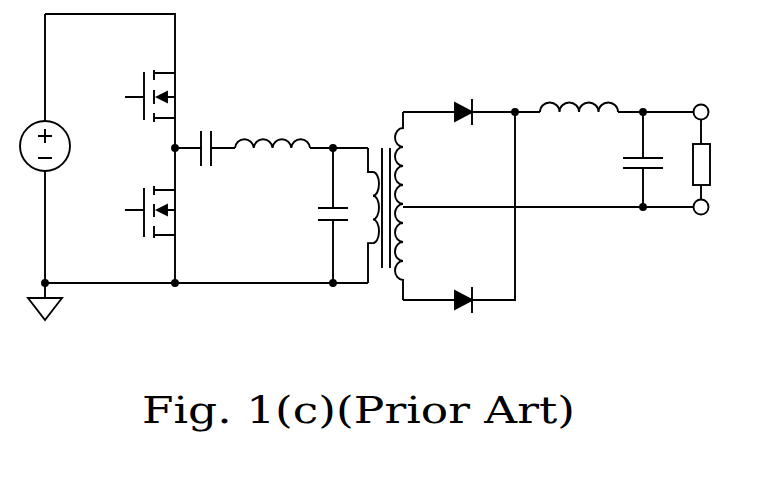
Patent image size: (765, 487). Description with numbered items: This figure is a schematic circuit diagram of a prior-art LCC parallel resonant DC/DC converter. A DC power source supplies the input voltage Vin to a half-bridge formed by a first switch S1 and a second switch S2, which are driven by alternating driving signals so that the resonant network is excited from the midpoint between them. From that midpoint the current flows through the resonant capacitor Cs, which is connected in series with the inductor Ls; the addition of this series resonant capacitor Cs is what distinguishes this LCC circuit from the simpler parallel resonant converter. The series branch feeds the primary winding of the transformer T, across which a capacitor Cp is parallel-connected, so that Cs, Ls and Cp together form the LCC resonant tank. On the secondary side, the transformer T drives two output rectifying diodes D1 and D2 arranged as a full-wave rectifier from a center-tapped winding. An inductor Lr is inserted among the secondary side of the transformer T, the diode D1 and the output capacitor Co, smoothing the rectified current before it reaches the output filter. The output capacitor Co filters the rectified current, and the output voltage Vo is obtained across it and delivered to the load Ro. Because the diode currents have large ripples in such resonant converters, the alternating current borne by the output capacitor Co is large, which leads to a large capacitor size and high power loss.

The input voltage Vin is at (57, 92).
The first switch S1 is at (139, 96).
The second switch S2 is at (139, 212).
The resonant capacitor Cs is at (211, 131).
The inductor Ls is at (272, 125).
The capacitor Cp is at (319, 215).
The transformer T is at (385, 198).
The diode D1 is at (464, 95).
The diode D2 is at (465, 283).
The inductor Lr is at (579, 92).
The output voltage Vo is at (671, 146).
The output capacitor Co is at (631, 159).
The load Ro is at (717, 160).